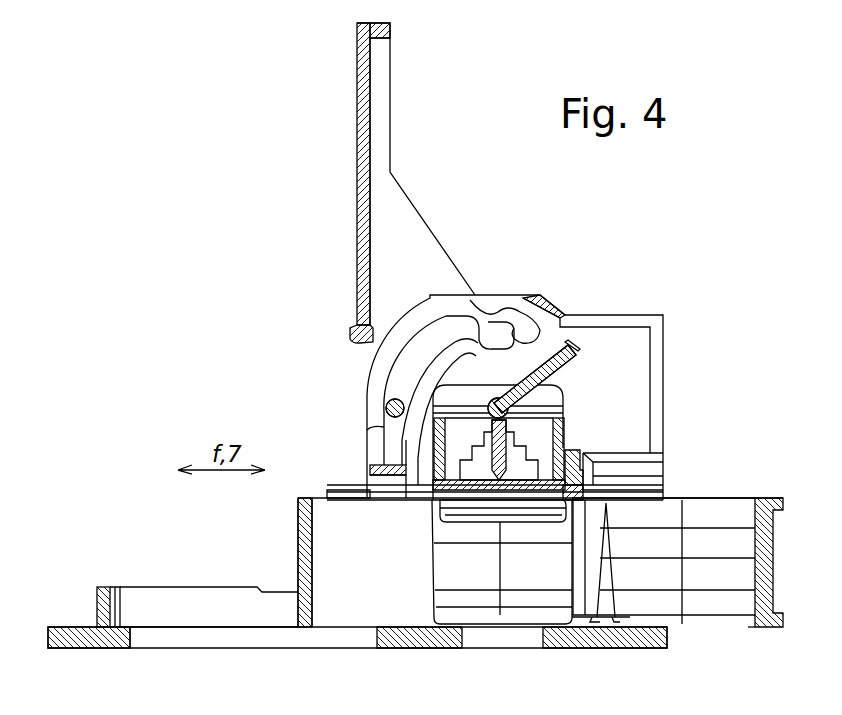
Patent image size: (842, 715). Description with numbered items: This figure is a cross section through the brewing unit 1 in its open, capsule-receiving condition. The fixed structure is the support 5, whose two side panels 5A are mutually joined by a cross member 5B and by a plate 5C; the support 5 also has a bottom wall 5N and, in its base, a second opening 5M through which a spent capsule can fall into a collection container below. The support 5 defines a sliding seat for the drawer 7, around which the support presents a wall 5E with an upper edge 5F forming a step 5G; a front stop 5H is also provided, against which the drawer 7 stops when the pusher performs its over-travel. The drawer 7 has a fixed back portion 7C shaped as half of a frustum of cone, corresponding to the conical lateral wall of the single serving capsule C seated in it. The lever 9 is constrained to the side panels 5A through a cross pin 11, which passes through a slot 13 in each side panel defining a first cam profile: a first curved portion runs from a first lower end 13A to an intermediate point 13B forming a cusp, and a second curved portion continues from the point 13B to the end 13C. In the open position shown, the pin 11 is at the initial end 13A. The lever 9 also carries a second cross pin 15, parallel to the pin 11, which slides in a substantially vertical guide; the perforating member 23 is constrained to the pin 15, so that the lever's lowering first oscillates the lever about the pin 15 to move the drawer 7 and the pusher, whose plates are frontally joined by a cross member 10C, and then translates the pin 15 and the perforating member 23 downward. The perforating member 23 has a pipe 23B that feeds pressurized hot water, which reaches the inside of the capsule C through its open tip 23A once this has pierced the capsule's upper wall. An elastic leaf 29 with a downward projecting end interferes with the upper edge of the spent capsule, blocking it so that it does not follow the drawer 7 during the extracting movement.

The brewing unit 1 is at (258, 263).
The lever 9 is at (424, 194).
The slot 13 is at (427, 338).
The first lower end of slot 13A is at (384, 433).
The intermediate point of slot 13B is at (466, 313).
The end of slot 13C is at (503, 322).
The support 5 is at (58, 609).
The side panel 5A is at (637, 342).
The cross member 5B is at (560, 312).
The plate 5C is at (575, 470).
The wall 5E is at (212, 600).
The upper edge 5F is at (185, 588).
The step 5G is at (265, 590).
The front stop 5H is at (120, 607).
The second opening 5M is at (130, 637).
The bottom wall 5N is at (420, 646).
The second cross pin 15 is at (504, 398).
The perforating member 23 is at (607, 410).
The tip of perforating member 23A is at (480, 470).
The pipe 23B is at (578, 372).
The cross pin 11 is at (385, 408).
The cross member of pusher 10C is at (378, 462).
The elastic leaf 29 is at (607, 487).
The drawer 7 is at (740, 645).
The fixed back portion of drawer 7C is at (747, 528).
The capsule C is at (432, 575).